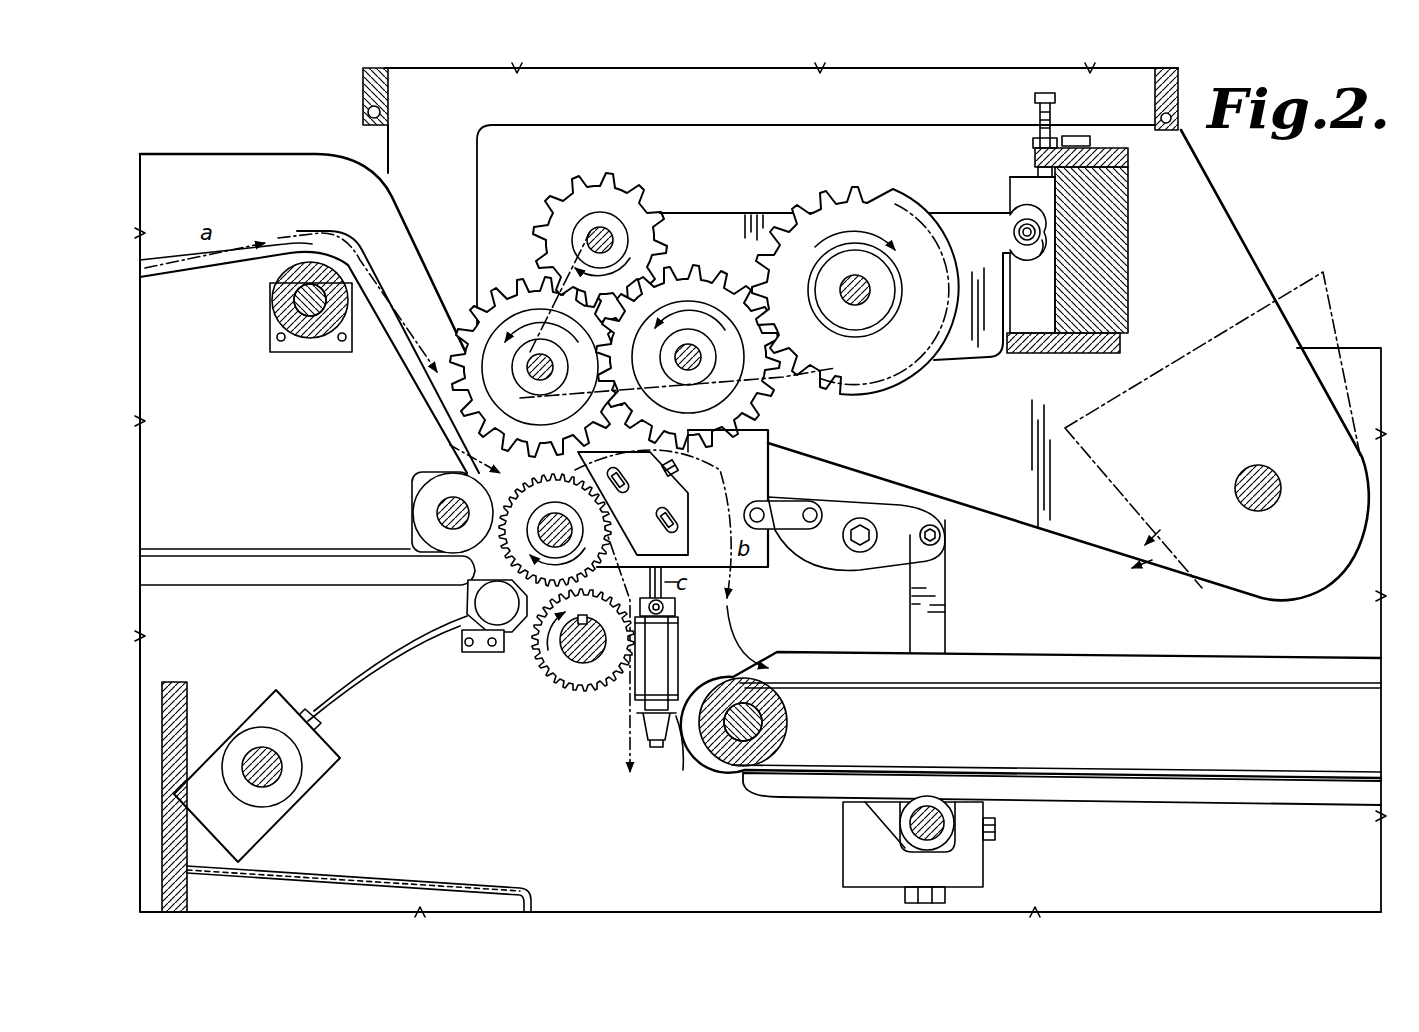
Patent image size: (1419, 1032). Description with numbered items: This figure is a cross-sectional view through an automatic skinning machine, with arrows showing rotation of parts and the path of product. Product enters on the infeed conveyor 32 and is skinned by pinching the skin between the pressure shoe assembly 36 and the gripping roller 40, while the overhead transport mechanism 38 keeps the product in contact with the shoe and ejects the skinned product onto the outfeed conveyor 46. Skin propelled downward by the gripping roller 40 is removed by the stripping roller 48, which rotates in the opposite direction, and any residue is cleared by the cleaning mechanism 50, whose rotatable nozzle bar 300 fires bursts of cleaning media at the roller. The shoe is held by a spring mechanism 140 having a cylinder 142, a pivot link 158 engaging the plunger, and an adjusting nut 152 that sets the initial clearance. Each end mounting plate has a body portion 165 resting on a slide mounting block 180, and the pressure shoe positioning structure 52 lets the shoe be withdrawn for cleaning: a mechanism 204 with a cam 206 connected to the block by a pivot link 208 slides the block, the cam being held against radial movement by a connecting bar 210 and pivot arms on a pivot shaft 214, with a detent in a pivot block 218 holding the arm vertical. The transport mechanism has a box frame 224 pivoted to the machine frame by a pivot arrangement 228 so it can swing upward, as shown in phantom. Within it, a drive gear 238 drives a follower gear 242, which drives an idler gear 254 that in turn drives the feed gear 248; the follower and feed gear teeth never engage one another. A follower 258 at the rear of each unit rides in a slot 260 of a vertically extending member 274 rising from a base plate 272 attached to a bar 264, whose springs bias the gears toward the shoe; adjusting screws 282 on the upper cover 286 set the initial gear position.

The infeed conveyor 32 is at (214, 268).
The pressure shoe assembly 36 is at (703, 483).
The overhead transport mechanism 38 is at (725, 200).
The gripping roller 40 is at (578, 491).
The outfeed conveyor 46 is at (1048, 682).
The stripping roller 48 is at (583, 692).
The cleaning mechanism 50 is at (360, 726).
The pressure shoe positioning structure 52 is at (840, 470).
The mechanism 140 is at (702, 628).
The cylinder 142 is at (679, 657).
The adjusting nut 152 is at (667, 742).
The pivot link 158 is at (672, 608).
The body portion 165 is at (690, 492).
The slide mounting block 180 is at (778, 450).
The mechanism 204 is at (948, 585).
The cam 206 is at (846, 560).
The pivot link 208 is at (790, 500).
The connecting bar 210 is at (918, 616).
The pivot shaft 214 is at (912, 834).
The pivot block 218 is at (984, 876).
The box frame 224 is at (712, 122).
The pivot arrangement 228 is at (1258, 466).
The drive gear 238 is at (870, 200).
The follower gear 242 is at (705, 268).
The feed gear 248 is at (508, 290).
The idler gear 254 is at (625, 190).
The follower 258 is at (1012, 233).
The slot 260 is at (1040, 254).
The bar 264 is at (1130, 262).
The base plate 272 is at (1076, 356).
The vertically extending member 274 is at (1010, 182).
The adjusting screw 282 is at (1034, 97).
The upper plate or cover 286 is at (1086, 147).
The nozzle bar 300 is at (494, 629).